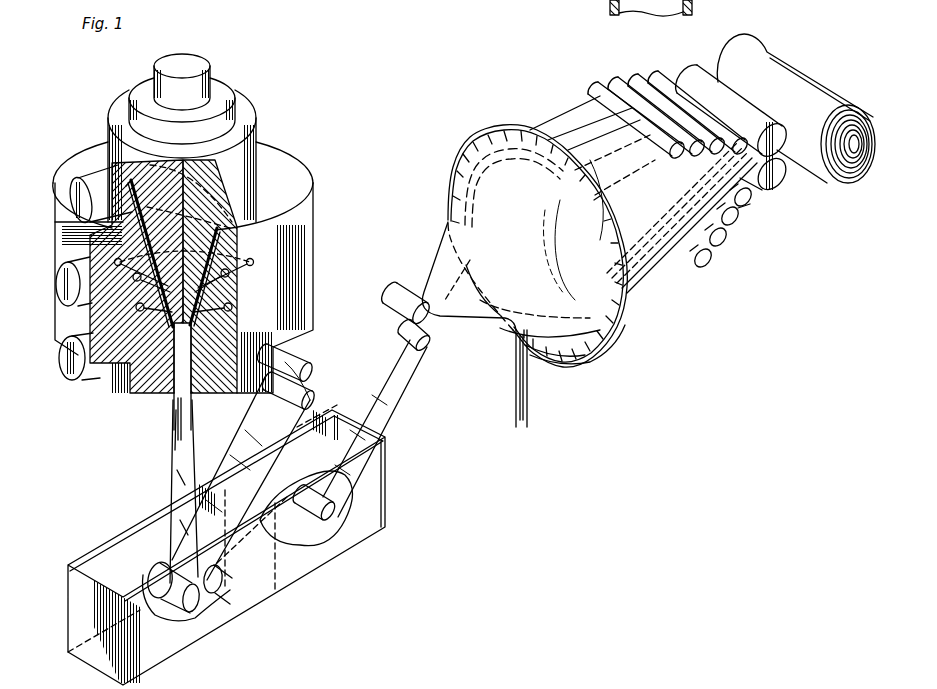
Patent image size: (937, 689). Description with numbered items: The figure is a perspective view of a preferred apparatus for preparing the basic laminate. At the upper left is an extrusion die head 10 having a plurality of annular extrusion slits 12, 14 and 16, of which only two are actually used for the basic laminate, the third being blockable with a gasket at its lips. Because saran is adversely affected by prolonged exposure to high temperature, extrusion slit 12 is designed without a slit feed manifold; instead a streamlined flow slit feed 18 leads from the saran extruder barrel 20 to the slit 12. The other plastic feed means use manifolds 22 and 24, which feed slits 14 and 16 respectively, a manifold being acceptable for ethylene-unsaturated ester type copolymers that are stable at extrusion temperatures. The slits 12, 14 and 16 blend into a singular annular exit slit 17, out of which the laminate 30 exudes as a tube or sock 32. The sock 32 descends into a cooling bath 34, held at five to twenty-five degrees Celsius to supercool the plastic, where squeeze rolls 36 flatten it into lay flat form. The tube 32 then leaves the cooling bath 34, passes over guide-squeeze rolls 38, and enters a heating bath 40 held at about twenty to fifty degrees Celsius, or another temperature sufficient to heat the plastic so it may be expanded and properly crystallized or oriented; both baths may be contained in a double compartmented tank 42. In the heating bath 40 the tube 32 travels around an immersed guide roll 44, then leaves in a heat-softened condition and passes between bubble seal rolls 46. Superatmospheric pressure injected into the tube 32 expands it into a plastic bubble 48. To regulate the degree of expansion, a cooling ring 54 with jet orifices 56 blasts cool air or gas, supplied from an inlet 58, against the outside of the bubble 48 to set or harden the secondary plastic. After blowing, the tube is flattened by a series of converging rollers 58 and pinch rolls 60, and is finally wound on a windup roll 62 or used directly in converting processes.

The extrusion die head 10 is at (240, 105).
The extrusion slit 12 is at (213, 222).
The extrusion slit 14 is at (282, 330).
The extrusion slit 16 is at (234, 292).
The annular exit slit 17 is at (703, 0).
The streamlined flow slit feed 18 is at (205, 192).
The saran extruder barrel 20 is at (78, 178).
The manifold 22 is at (232, 310).
The manifold 24 is at (228, 276).
The laminate 30 is at (606, 7).
The tube or sock 32 is at (170, 474).
The cooling bath 34 is at (244, 600).
The squeeze rolls 36 is at (195, 600).
The guide-squeeze rolls 38 is at (311, 372).
The heating bath 40 is at (355, 540).
The double compartmented tank 42 is at (392, 488).
The guide roll 44 is at (333, 530).
The bubble seal rolls 46 is at (390, 300).
The plastic bubble 48 is at (582, 125).
The cooling ring 54 is at (580, 356).
The jet orifices 56 is at (606, 331).
The converging rollers 58 is at (615, 88).
The pinch rolls 60 is at (692, 78).
The windup roll 62 is at (837, 180).